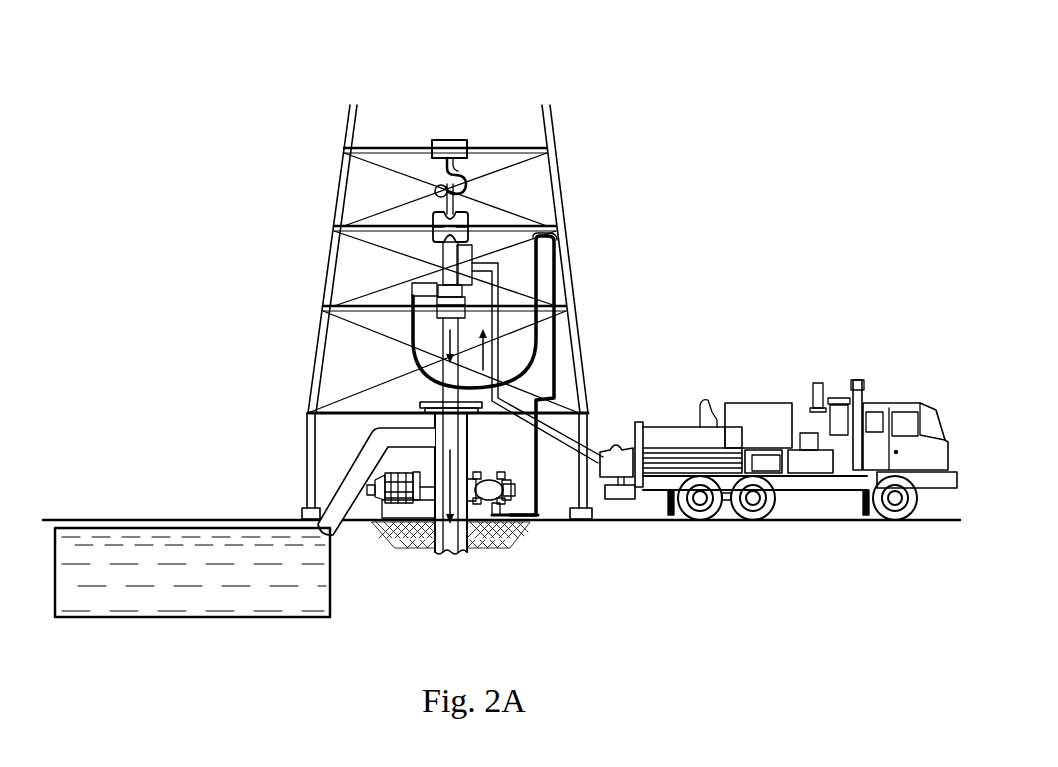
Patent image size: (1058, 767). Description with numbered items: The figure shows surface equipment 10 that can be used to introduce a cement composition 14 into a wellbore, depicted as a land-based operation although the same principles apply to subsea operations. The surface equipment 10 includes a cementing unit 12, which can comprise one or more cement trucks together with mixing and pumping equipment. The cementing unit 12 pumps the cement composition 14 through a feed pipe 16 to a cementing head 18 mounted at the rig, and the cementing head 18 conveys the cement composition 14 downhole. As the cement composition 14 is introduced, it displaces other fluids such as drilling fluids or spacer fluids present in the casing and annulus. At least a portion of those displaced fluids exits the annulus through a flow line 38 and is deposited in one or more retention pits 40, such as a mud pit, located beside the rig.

The surface equipment 10 is at (707, 158).
The cementing unit 12 is at (805, 497).
The cement composition 14 is at (440, 342).
The feed pipe 16 is at (555, 425).
The cementing head 18 is at (490, 215).
The flow line 38 is at (348, 475).
The retention pit 40 is at (198, 617).